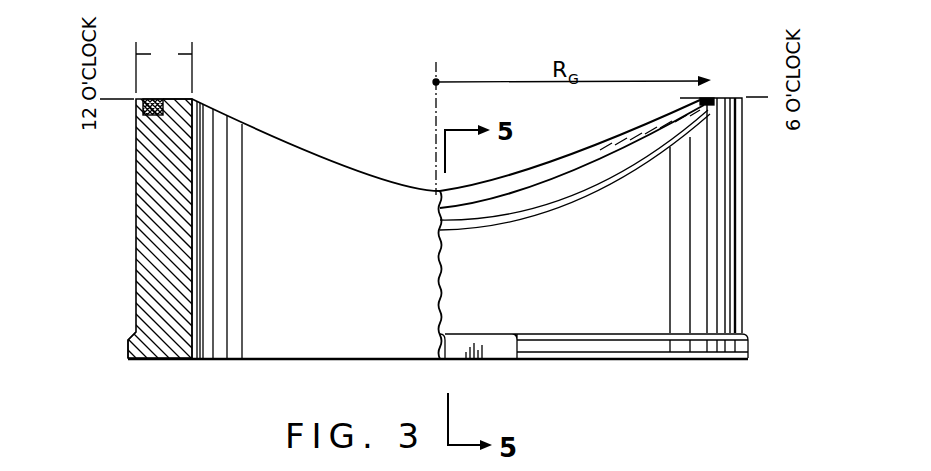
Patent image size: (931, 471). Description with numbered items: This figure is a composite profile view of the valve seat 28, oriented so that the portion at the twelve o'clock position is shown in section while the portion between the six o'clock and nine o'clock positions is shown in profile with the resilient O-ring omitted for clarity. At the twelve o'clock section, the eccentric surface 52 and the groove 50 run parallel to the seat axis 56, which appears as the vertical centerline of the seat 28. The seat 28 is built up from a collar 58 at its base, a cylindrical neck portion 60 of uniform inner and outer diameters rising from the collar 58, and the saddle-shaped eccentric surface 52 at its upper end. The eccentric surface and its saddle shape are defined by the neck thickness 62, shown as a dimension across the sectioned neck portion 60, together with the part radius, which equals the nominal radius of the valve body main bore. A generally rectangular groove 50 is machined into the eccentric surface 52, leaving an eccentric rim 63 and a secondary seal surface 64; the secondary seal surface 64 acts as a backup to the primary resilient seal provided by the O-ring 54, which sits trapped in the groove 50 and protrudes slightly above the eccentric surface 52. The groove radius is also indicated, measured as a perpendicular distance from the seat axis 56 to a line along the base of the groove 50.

The seat 28 is at (128, 272).
The groove 50 is at (484, 205).
The eccentric surface 52 is at (186, 92).
The O-ring 54 is at (150, 98).
The seat axis 56 is at (436, 122).
The collar 58 is at (128, 349).
The cylindrical neck portion 60 is at (138, 205).
The neck thickness 62 is at (164, 67).
The eccentric rim 63 is at (573, 192).
The secondary seal surface 64 is at (570, 158).